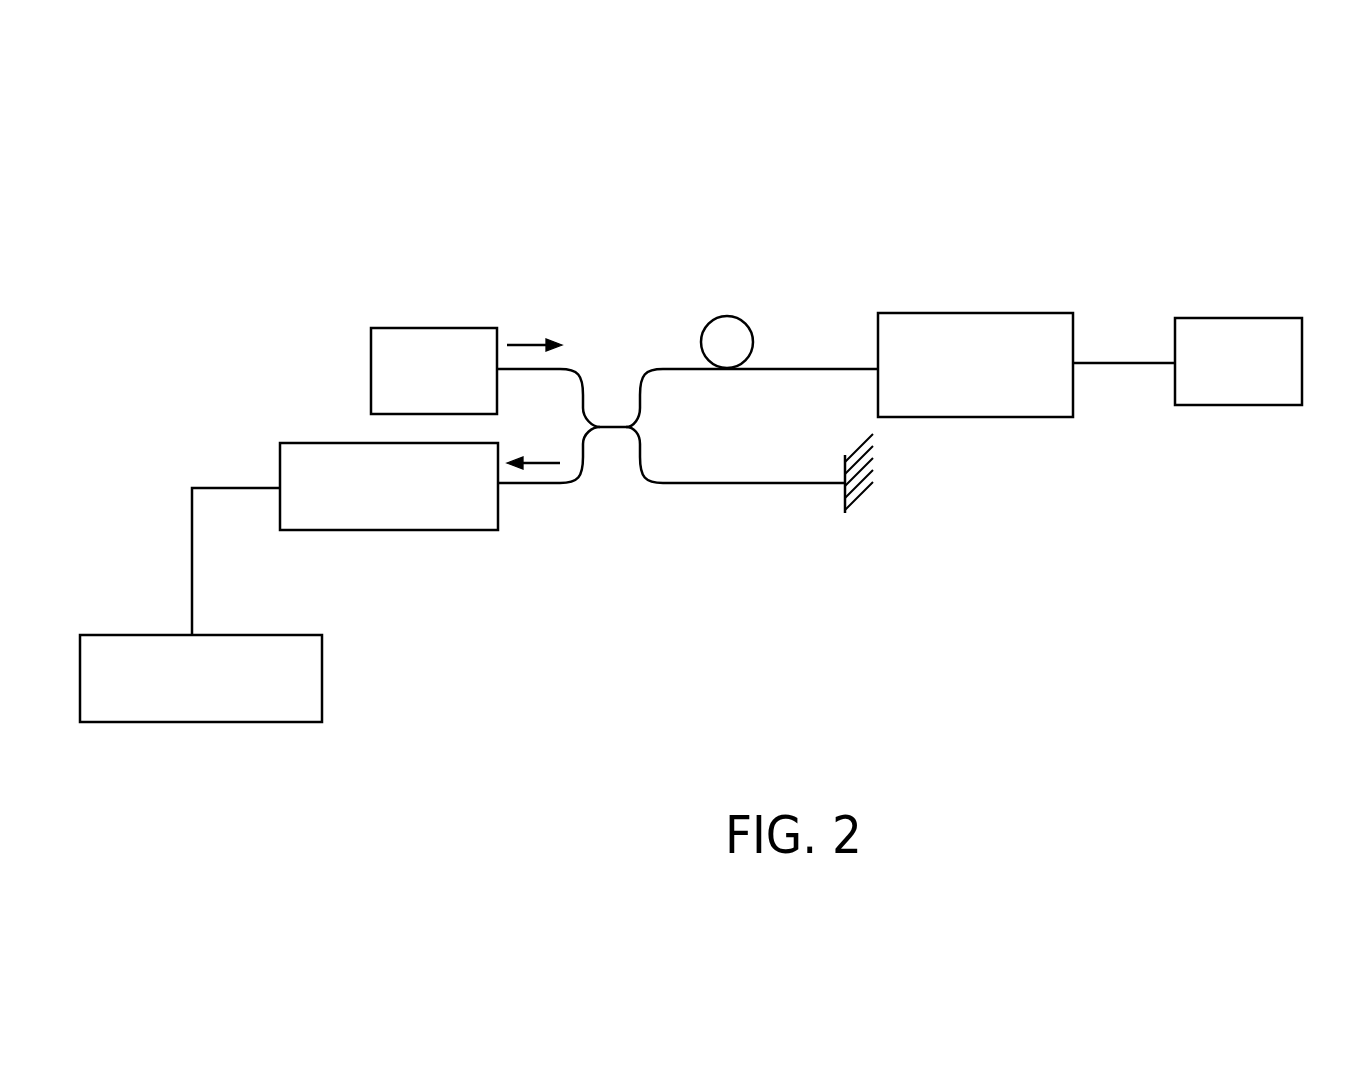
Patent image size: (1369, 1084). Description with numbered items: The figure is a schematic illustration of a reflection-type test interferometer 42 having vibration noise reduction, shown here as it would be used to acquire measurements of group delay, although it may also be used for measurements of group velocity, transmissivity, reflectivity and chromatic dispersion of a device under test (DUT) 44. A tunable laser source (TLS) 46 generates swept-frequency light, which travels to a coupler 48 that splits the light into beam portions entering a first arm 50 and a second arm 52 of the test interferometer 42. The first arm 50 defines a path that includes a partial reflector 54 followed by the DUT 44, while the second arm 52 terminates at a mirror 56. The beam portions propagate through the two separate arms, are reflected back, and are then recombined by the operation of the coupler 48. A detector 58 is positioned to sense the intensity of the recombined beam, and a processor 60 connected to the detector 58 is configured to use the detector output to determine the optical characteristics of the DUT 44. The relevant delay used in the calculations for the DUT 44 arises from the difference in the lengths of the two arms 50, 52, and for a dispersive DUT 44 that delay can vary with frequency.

The test interferometer 42 is at (852, 158).
The device under test (DUT) 44 is at (1278, 330).
The tunable laser source (TLS) 46 is at (385, 345).
The coupler 48 is at (613, 425).
The first arm 50 is at (785, 370).
The second arm 52 is at (790, 484).
The partial reflector 54 is at (1047, 326).
The mirror 56 is at (858, 503).
The detector 58 is at (470, 510).
The processor 60 is at (300, 700).